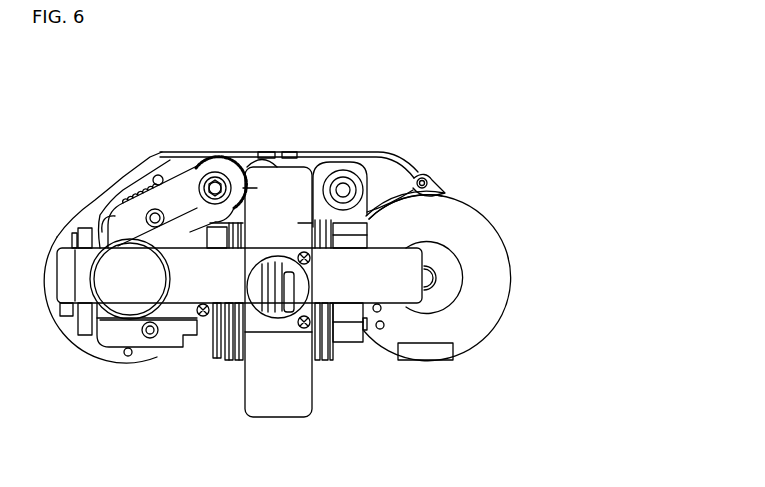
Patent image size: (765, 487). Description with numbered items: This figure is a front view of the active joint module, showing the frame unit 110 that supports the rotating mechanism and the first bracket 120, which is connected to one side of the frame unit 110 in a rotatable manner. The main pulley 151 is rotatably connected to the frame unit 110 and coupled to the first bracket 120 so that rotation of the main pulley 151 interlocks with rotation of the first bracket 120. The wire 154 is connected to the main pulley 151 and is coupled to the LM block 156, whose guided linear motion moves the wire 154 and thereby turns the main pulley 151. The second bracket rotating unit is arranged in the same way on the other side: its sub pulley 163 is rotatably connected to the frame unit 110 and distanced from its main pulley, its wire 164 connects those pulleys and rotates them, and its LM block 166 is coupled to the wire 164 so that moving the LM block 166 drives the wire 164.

The frame unit 110 is at (400, 172).
The first bracket 120 is at (137, 290).
The main pulley 151 is at (338, 350).
The wire 154 is at (325, 352).
The LM block 156 is at (328, 150).
The sub pulley 163 is at (216, 350).
The wire 164 is at (235, 352).
The LM block 166 is at (204, 150).